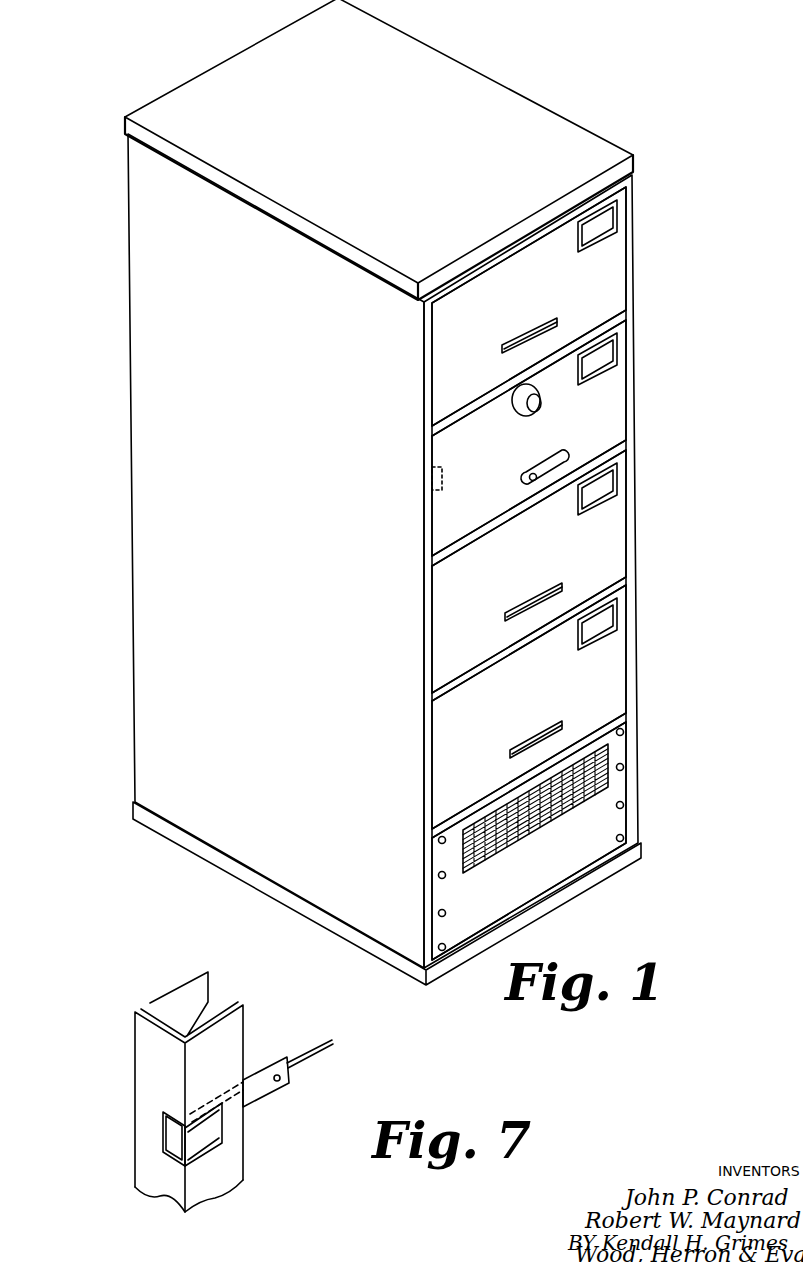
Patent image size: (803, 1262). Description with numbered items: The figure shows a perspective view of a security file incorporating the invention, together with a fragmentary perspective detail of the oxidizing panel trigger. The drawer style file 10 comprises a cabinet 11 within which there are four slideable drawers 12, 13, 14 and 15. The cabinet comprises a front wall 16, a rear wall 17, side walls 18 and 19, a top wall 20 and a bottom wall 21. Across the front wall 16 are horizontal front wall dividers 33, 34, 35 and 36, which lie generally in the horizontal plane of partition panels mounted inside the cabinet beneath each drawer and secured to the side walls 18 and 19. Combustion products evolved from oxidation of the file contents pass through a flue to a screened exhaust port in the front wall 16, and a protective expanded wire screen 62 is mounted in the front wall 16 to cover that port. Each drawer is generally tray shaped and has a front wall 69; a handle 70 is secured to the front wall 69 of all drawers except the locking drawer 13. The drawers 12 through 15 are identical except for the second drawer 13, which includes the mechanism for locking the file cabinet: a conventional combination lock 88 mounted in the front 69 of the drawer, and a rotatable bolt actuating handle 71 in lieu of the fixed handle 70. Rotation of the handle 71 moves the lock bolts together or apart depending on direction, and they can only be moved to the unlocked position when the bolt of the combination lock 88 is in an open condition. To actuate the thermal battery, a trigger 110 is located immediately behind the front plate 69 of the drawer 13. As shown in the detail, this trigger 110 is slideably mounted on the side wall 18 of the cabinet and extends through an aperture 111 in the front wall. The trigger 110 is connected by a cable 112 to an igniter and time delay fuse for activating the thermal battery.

In FIG. 1, the drawer style file 10 is at (652, 172).
In FIG. 1, the cabinet 11 is at (506, 84).
In FIG. 1, the first drawer 12 is at (618, 283).
In FIG. 1, the locking drawer 13 is at (623, 401).
In FIG. 1, the third drawer 14 is at (623, 514).
In FIG. 1, the fourth drawer 15 is at (618, 656).
In FIG. 1, the front wall 16 is at (638, 785).
In FIG. 1, the rear wall 17 is at (163, 97).
In FIG. 1, the side wall 18 is at (146, 239).
In FIG. 7, the side wall 18 is at (178, 998).
In FIG. 1, the side wall 19 is at (634, 213).
In FIG. 1, the top wall 20 is at (379, 141).
In FIG. 1, the bottom wall 21 is at (218, 868).
In FIG. 1, the front wall divider 33 is at (628, 314).
In FIG. 1, the front wall divider 34 is at (628, 448).
In FIG. 1, the front wall divider 35 is at (630, 581).
In FIG. 1, the front wall divider 36 is at (633, 713).
In FIG. 1, the protective expanded wire screen 62 is at (550, 816).
In FIG. 1, the drawer front wall 69 is at (457, 513).
In FIG. 1, the handle 70 is at (550, 320).
In FIG. 1, the bolt actuating handle 71 is at (530, 466).
In FIG. 1, the combination lock 88 is at (546, 405).
In FIG. 1, the trigger 110 is at (430, 481).
In FIG. 7, the trigger 110 is at (188, 1150).
In FIG. 7, the aperture 111 is at (172, 1112).
In FIG. 7, the cable 112 is at (340, 1010).